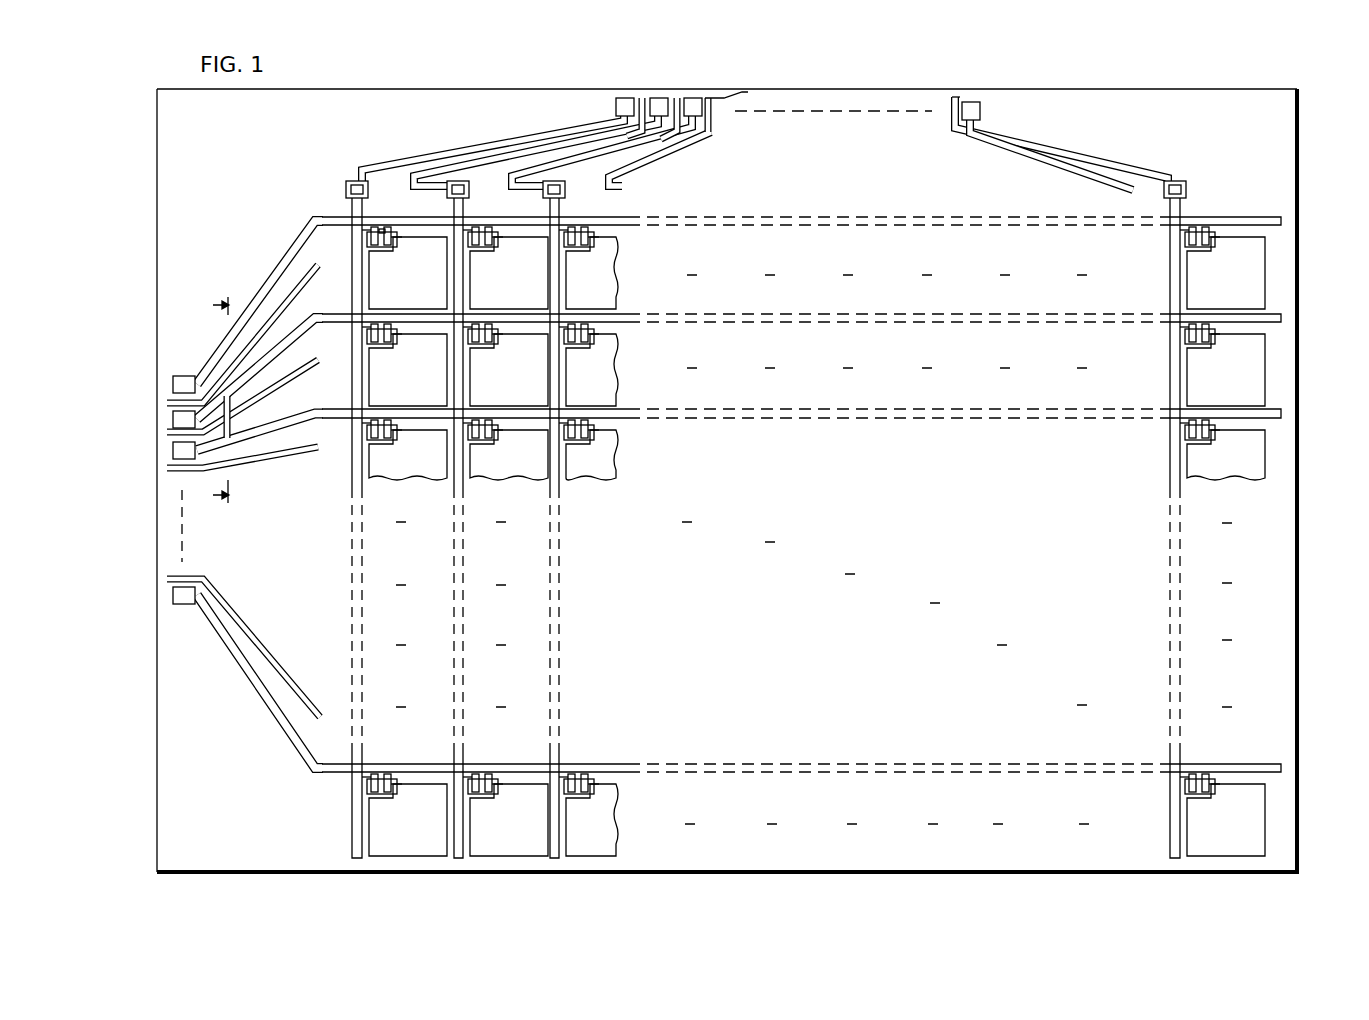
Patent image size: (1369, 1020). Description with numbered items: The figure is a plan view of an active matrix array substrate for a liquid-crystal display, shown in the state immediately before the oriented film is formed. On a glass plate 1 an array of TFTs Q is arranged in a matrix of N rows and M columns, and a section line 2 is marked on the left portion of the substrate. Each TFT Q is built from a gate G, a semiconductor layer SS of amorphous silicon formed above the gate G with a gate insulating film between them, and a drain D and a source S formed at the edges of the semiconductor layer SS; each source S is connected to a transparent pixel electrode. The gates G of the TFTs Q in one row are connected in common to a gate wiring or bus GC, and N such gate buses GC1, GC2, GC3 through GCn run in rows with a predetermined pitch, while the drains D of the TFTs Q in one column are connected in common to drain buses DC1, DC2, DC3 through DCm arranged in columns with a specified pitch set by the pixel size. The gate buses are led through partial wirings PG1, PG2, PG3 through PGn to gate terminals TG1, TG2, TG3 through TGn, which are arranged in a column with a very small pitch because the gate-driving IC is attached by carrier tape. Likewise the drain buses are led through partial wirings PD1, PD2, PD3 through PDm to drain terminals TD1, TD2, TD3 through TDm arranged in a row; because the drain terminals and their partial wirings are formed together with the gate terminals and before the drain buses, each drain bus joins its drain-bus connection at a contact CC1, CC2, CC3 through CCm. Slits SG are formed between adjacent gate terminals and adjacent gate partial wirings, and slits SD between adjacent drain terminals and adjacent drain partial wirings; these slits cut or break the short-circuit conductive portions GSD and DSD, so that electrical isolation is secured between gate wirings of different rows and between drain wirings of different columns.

The glass plate 1 is at (1310, 600).
The gate wiring or bus GC is at (840, 480).
The gate wiring or bus GC1 is at (1283, 219).
The gate wiring or bus GC2 is at (1283, 318).
The gate wiring or bus GC3 is at (1283, 412).
The gate wiring or bus GCn is at (1283, 768).
The drain wiring or bus DC1 is at (350, 860).
The drain wiring or bus DC2 is at (455, 860).
The drain wiring or bus DC3 is at (560, 860).
The drain wiring or bus DCm is at (1168, 860).
The gate terminal TG1 is at (172, 385).
The gate terminal TG2 is at (172, 418).
The gate terminal TG3 is at (172, 455).
The gate terminal TGn is at (172, 598).
The drain terminal TD1 is at (626, 99).
The drain terminal TD2 is at (661, 99).
The drain terminal TD3 is at (704, 100).
The drain terminal TDm is at (979, 103).
The partial wiring PG1 is at (283, 262).
The partial wiring PG2 is at (288, 345).
The partial wiring PG3 is at (278, 420).
The partial wiring PGn is at (266, 706).
The partial wiring PD1 is at (390, 162).
The partial wiring PD2 is at (497, 152).
The partial wiring PD3 is at (628, 158).
The partial wiring PDm is at (1098, 150).
The contact CC1 is at (350, 182).
The contact CC2 is at (450, 180).
The contact CC3 is at (546, 180).
The contact CCm is at (1187, 183).
The slit SG is at (167, 402).
The slit SD is at (642, 98).
The short-circuit conductive-portion GSD is at (232, 425).
The short-circuit conductive-portion DSD is at (663, 152).
The TFT Q is at (378, 240).
The semiconductor layer SS is at (394, 231).
The drain D is at (364, 238).
The gate G is at (384, 248).
The source S is at (406, 234).
The section line 2 is at (218, 403).